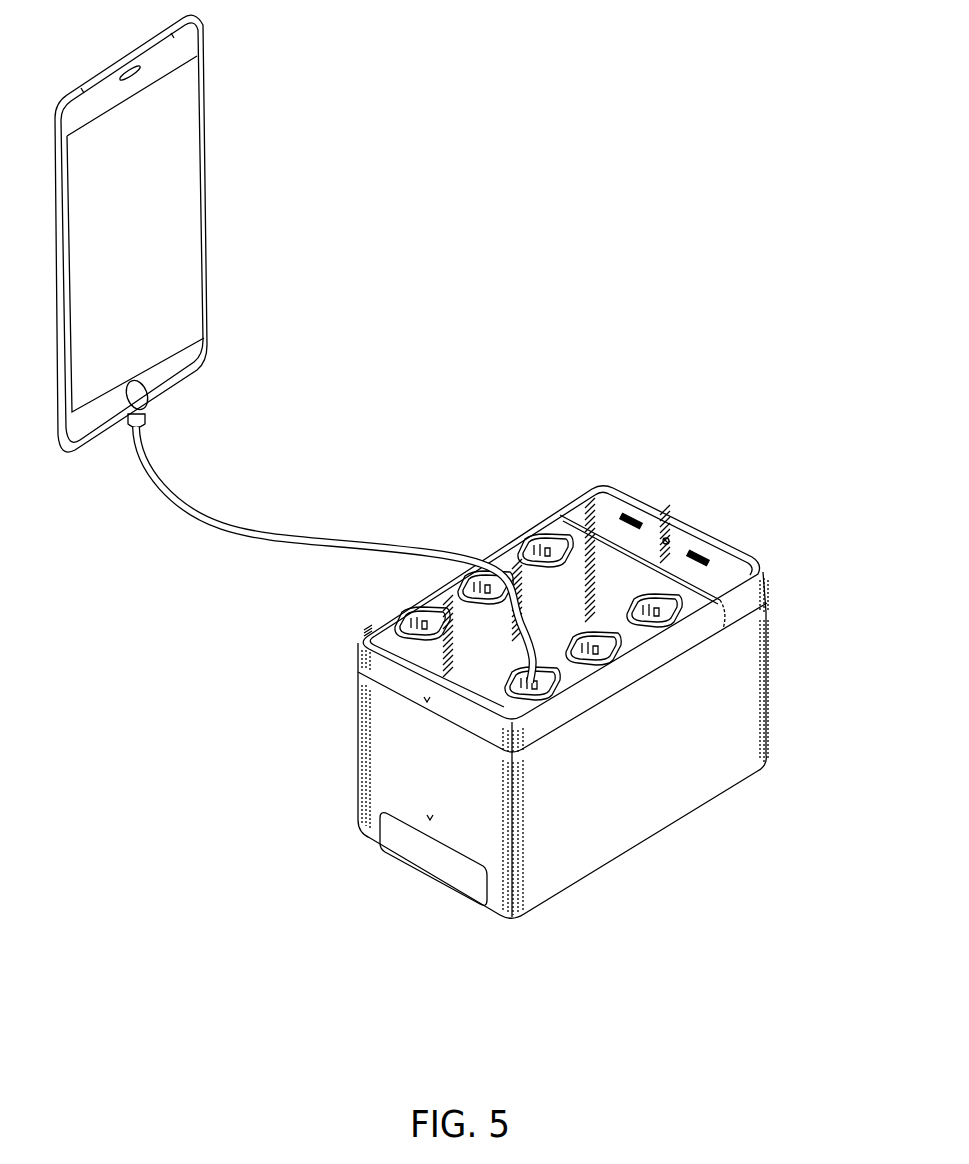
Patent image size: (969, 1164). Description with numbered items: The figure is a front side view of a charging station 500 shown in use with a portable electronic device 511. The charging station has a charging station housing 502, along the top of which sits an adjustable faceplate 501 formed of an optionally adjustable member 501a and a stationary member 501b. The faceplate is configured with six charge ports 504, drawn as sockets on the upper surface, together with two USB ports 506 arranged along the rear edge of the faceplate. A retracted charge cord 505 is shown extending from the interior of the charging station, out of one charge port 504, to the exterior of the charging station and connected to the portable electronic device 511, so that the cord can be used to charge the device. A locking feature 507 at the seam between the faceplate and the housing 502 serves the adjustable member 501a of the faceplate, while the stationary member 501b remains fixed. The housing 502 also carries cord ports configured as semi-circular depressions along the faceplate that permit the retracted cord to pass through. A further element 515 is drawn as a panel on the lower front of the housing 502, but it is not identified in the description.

The charging station 500 is at (655, 461).
The adjustable faceplate 501 is at (613, 620).
The adjustable member 501a is at (683, 635).
The stationary member 501b is at (747, 600).
The charging station housing 502 is at (697, 773).
The charge port 504 is at (620, 648).
The charge cord 505 is at (222, 525).
The USB port 506 is at (700, 555).
The locking feature 507 is at (421, 700).
The portable electronic device 511 is at (207, 180).
The access panel 515 is at (430, 858).